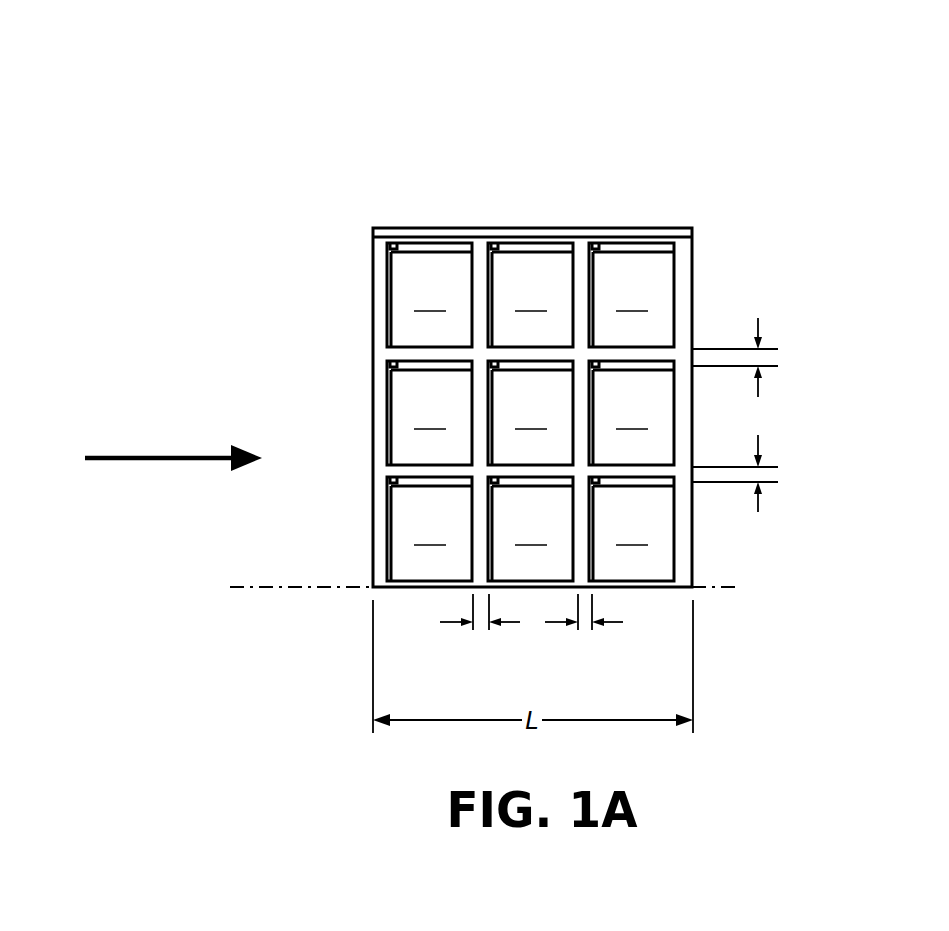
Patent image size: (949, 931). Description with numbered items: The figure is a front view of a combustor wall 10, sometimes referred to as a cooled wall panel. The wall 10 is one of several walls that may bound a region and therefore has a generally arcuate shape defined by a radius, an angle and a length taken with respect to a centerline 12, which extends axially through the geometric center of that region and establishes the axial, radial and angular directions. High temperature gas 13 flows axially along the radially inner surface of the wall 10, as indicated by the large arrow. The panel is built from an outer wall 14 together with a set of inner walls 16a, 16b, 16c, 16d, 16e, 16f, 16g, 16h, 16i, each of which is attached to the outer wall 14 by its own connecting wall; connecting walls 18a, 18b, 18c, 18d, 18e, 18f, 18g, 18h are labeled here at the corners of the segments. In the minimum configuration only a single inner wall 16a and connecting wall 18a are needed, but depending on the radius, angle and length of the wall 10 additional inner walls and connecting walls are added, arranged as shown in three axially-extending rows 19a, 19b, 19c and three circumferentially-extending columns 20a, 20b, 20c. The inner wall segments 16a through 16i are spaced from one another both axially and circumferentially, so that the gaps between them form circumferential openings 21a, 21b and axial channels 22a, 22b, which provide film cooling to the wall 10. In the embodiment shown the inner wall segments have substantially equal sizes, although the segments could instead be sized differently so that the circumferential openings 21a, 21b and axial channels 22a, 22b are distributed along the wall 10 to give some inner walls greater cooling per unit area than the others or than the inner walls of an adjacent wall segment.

The wall 10 is at (303, 138).
The centerline 12 is at (242, 587).
The high temperature gas 13 is at (166, 453).
The outer wall 14 is at (373, 258).
The inner wall 16a is at (429, 295).
The inner wall 16b is at (530, 295).
The inner wall 16c is at (631, 295).
The inner wall 16d is at (429, 413).
The inner wall 16e is at (530, 413).
The inner wall 16f is at (631, 413).
The inner wall 16g is at (429, 529).
The inner wall 16h is at (530, 529).
The inner wall 16i is at (631, 529).
The connecting wall 18a is at (393, 243).
The connecting wall 18b is at (495, 243).
The connecting wall 18c is at (596, 243).
The connecting wall 18d is at (390, 363).
The connecting wall 18e is at (491, 362).
The connecting wall 18f is at (594, 368).
The connecting wall 18g is at (390, 479).
The connecting wall 18h is at (490, 480).
The axially-extending row 19a is at (800, 286).
The axially-extending row 19b is at (813, 398).
The axially-extending row 19c is at (827, 538).
The circumferentially-extending column 20a is at (443, 198).
The circumferentially-extending column 20b is at (552, 198).
The circumferentially-extending column 20c is at (663, 198).
The circumferential opening 21a is at (513, 622).
The circumferential opening 21b is at (616, 622).
The axial channel 22a is at (762, 325).
The axial channel 22b is at (762, 440).